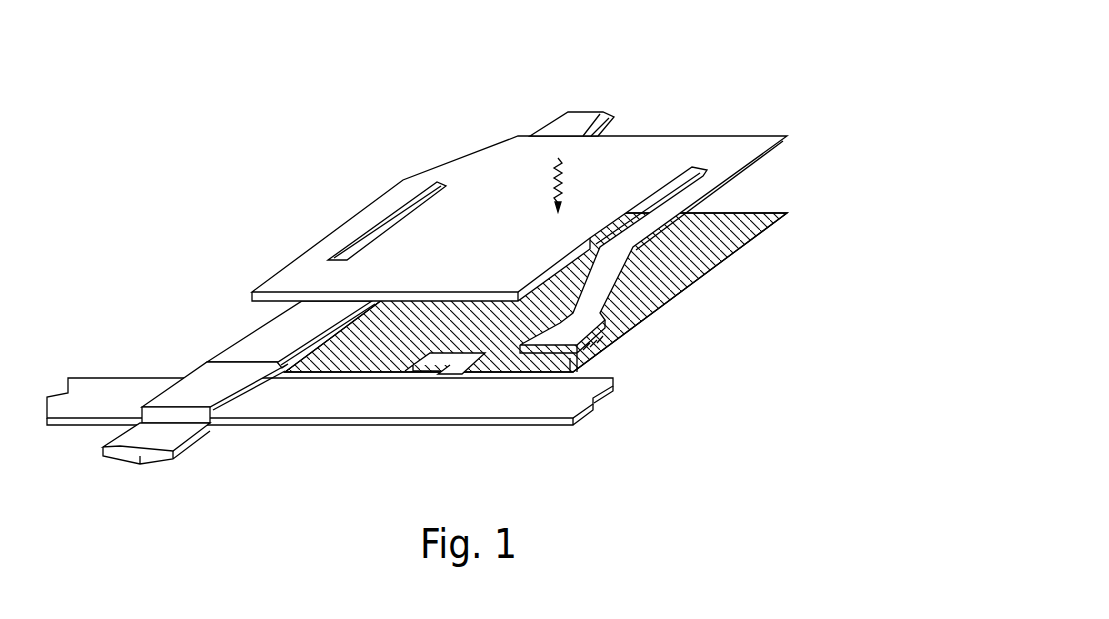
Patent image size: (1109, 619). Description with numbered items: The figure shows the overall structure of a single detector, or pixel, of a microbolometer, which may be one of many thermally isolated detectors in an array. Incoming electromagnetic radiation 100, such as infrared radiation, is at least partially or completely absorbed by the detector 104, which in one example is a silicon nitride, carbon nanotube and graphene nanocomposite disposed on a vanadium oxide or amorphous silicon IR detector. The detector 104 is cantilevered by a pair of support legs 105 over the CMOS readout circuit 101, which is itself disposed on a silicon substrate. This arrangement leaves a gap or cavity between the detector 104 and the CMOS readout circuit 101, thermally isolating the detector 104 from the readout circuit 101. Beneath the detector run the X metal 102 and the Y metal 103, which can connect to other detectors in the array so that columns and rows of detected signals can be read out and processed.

The infrared radiation 100 is at (501, 243).
The CMOS readout circuit 101 is at (674, 290).
The X metal 102 is at (441, 403).
The Y metal 103 is at (172, 440).
The detector 104 is at (671, 146).
The support legs 105 is at (579, 114).